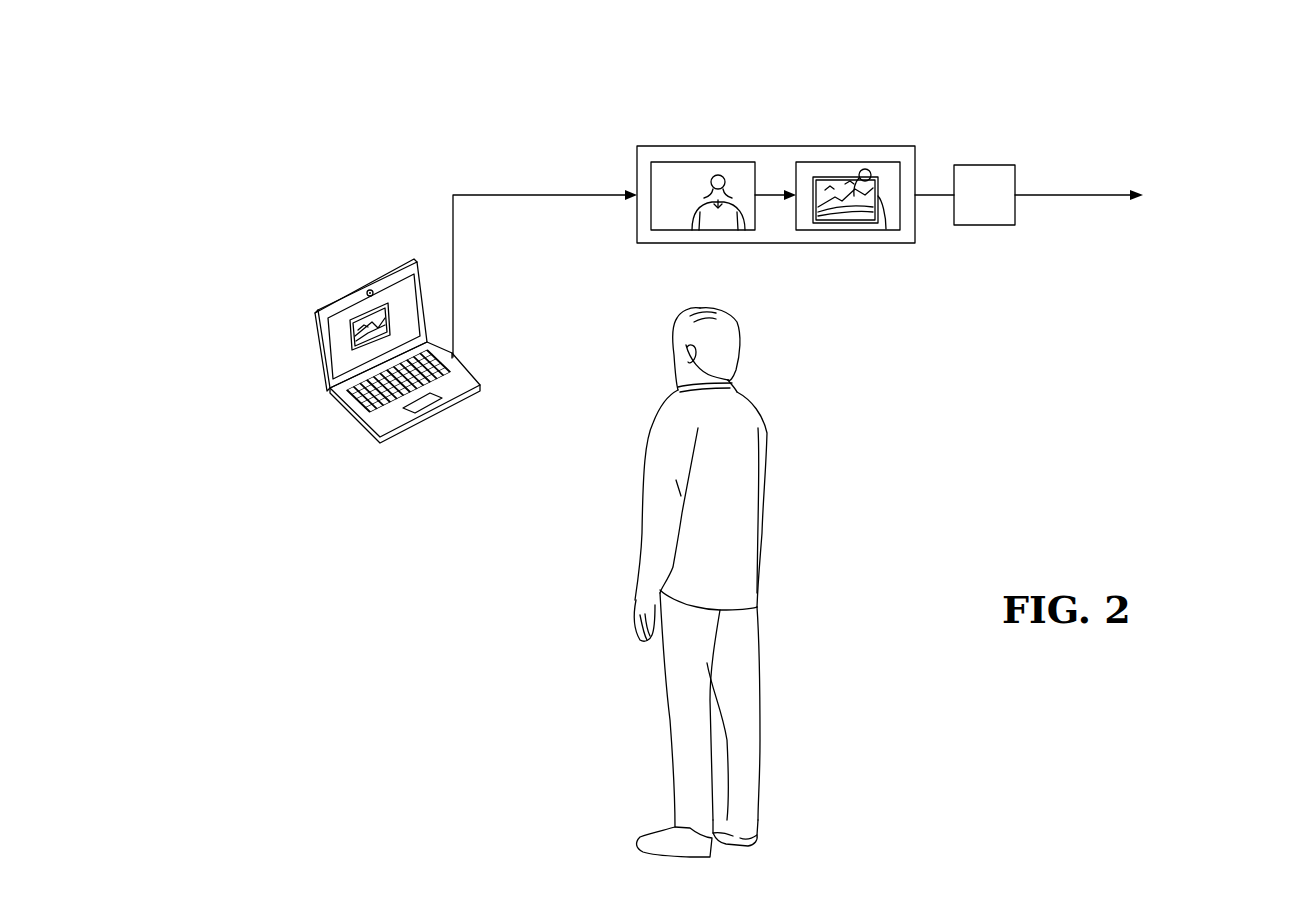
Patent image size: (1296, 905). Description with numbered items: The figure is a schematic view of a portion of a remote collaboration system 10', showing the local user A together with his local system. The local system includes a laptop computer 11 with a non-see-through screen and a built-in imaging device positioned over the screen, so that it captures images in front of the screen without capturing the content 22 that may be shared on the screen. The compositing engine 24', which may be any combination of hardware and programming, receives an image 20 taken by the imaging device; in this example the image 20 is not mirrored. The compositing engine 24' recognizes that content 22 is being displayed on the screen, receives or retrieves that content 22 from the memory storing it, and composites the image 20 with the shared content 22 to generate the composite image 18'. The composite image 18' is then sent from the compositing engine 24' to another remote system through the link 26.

The remote collaboration system 10' is at (457, 190).
The laptop computer 11 is at (356, 421).
The composite image 18' is at (883, 248).
The image 20 is at (702, 161).
The content 22 is at (352, 337).
The compositing engine 24' is at (776, 153).
The link 26 is at (982, 165).
The local user A is at (757, 677).